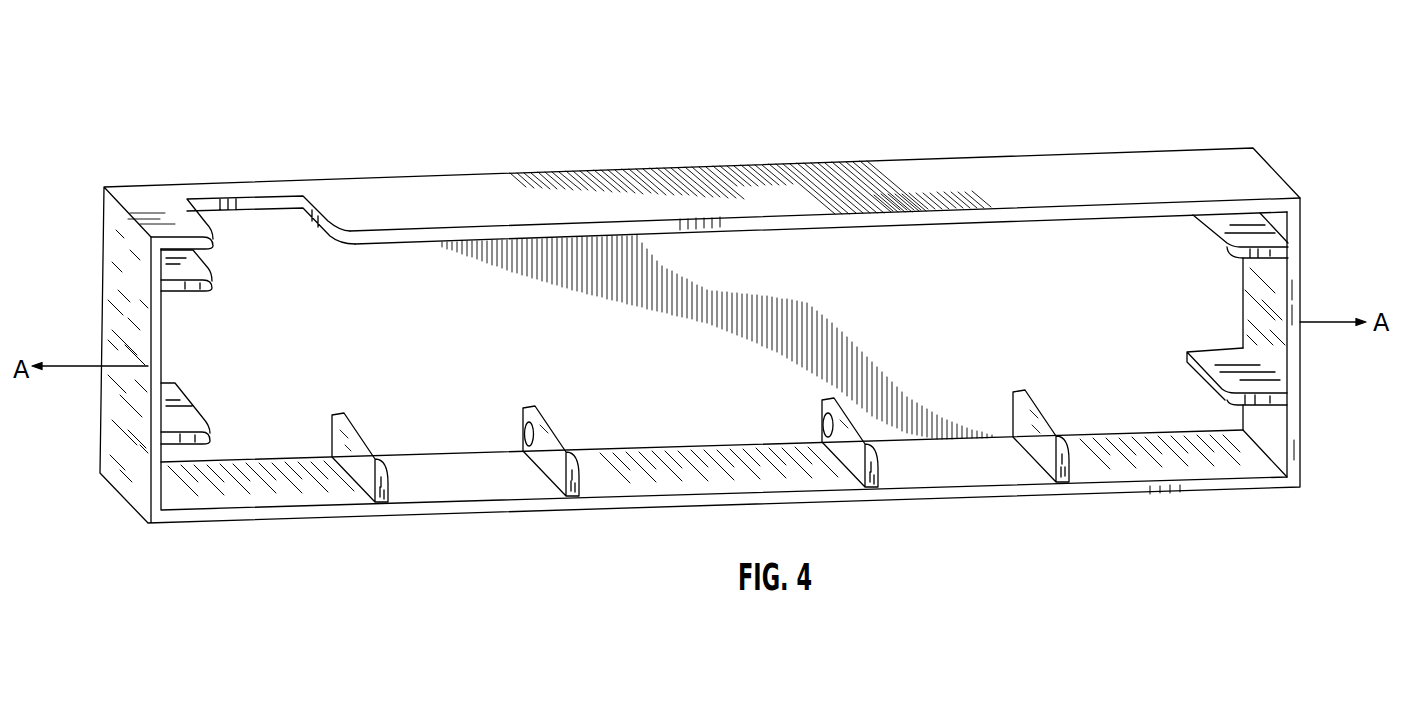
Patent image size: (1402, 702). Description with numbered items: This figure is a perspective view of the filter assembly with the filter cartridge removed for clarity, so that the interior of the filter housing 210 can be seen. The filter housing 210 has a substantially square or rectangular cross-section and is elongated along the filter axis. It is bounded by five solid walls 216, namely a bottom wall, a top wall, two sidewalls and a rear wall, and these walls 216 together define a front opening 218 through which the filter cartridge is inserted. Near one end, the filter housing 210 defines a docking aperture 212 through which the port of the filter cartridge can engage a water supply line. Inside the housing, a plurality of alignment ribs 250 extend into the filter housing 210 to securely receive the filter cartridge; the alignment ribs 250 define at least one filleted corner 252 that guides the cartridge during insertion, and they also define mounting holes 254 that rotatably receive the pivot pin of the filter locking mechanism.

The filter housing 210 is at (711, 310).
The docking aperture 212 is at (262, 195).
The solid walls 216 is at (1067, 170).
The front opening 218 is at (670, 443).
The alignment ribs 250 is at (1057, 458).
The filleted corner 252 is at (1250, 412).
The mounting holes 254 is at (817, 427).